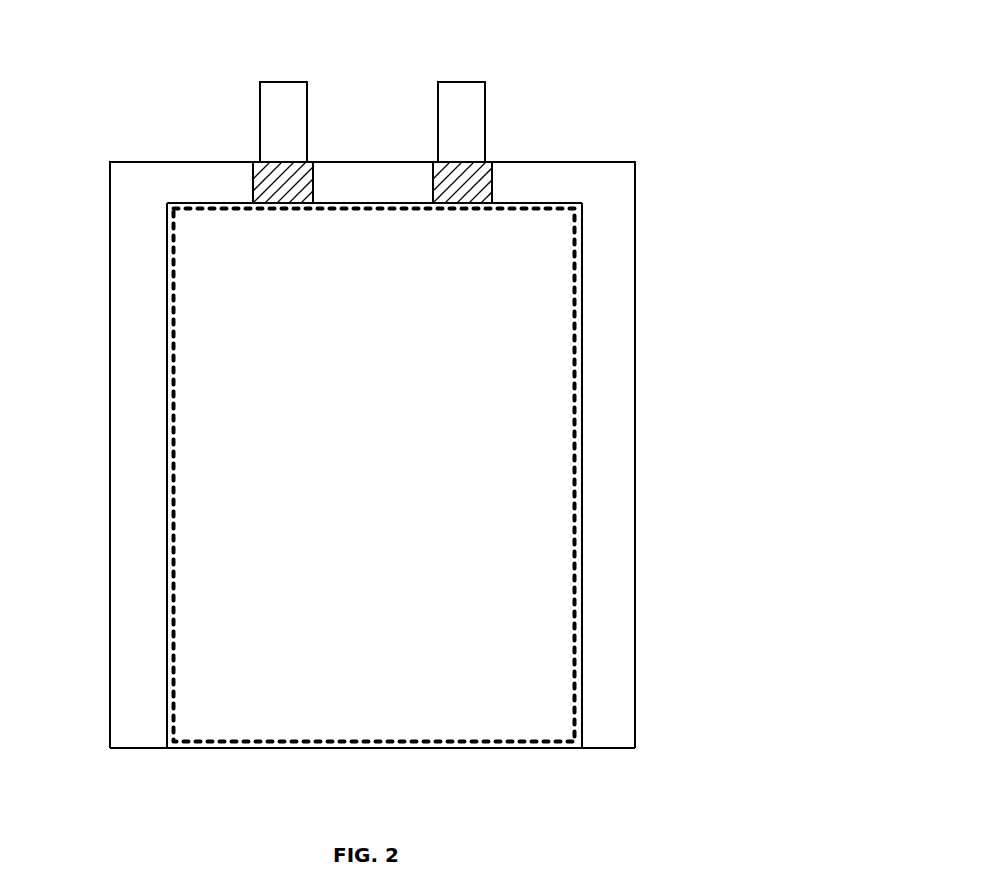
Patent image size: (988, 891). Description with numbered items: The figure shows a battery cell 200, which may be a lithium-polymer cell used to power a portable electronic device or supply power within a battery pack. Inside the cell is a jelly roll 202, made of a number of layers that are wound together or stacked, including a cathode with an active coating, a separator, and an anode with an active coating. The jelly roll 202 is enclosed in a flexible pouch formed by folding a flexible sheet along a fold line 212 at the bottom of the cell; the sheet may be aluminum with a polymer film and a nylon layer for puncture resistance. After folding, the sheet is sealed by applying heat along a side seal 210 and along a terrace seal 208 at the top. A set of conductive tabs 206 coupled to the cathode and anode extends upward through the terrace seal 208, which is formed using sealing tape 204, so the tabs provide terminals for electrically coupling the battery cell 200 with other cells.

The battery cell 200 is at (110, 162).
The jelly roll 202 is at (374, 475).
The sealing tape 204 is at (290, 203).
The conductive tabs 206 is at (298, 82).
The terrace seal 208 is at (523, 162).
The side seal 210 is at (110, 447).
The fold line 212 is at (448, 748).